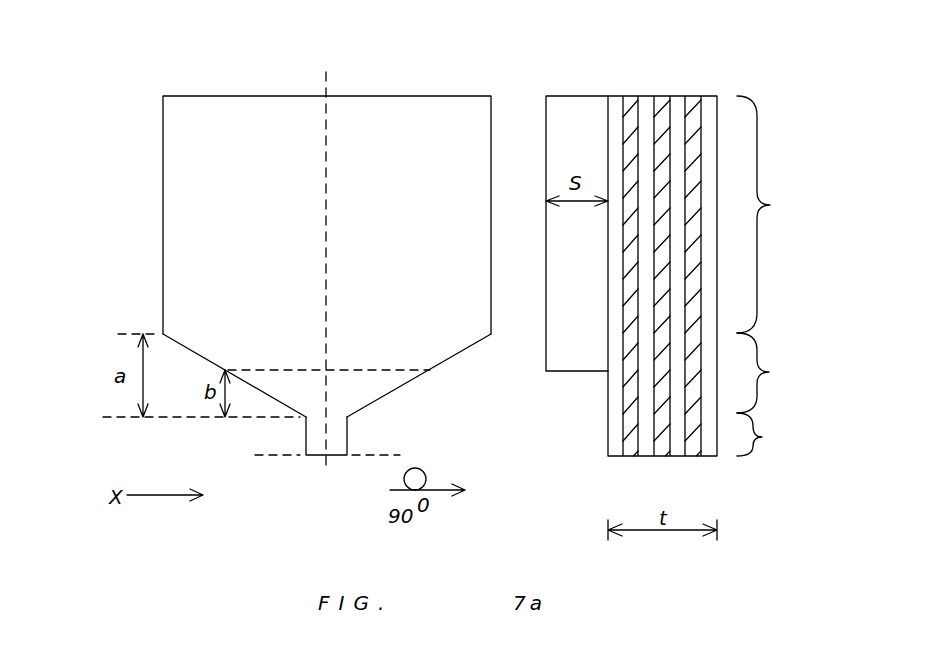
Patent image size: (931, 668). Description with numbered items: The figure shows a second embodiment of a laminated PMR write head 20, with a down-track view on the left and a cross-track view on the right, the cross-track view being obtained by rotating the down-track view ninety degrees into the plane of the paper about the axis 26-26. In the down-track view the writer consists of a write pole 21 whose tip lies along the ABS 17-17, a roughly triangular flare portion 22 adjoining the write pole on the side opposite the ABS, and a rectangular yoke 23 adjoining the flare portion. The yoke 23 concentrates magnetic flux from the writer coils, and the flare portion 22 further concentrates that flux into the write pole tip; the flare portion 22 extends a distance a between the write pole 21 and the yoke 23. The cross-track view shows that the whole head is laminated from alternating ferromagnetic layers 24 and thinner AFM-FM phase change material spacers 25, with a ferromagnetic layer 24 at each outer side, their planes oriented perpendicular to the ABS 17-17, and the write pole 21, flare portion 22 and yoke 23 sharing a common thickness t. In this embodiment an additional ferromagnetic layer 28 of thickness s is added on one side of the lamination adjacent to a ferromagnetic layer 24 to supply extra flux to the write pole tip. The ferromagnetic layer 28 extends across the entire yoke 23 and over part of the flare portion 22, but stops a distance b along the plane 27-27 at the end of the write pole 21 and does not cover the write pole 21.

The PMR write head 20 is at (142, 77).
The yoke 23 is at (177, 243).
The flare portion 22 is at (453, 337).
The write pole 21 is at (312, 456).
The plane 27- 27 is at (225, 370).
The axis 26- 26 is at (327, 275).
The ABS 17- 17 is at (334, 453).
The ferromagnetic layer 28 is at (572, 110).
The ferromagnetic layer 24 is at (678, 427).
The AFM-FM phase change material spacer 25 is at (629, 105).